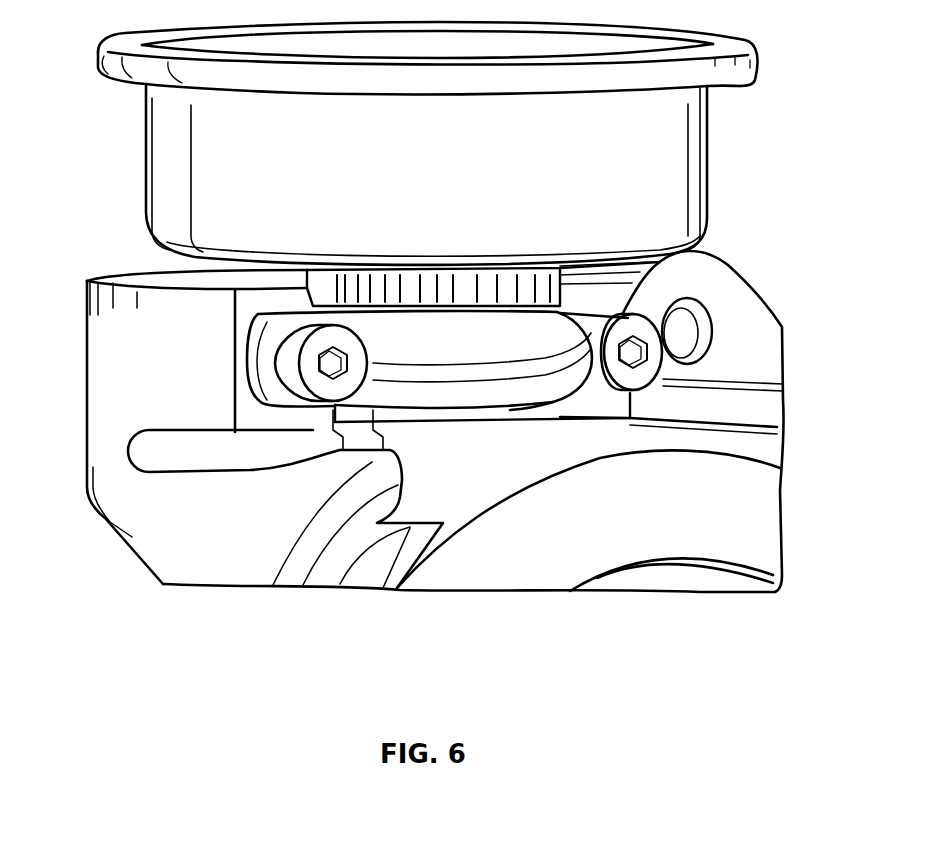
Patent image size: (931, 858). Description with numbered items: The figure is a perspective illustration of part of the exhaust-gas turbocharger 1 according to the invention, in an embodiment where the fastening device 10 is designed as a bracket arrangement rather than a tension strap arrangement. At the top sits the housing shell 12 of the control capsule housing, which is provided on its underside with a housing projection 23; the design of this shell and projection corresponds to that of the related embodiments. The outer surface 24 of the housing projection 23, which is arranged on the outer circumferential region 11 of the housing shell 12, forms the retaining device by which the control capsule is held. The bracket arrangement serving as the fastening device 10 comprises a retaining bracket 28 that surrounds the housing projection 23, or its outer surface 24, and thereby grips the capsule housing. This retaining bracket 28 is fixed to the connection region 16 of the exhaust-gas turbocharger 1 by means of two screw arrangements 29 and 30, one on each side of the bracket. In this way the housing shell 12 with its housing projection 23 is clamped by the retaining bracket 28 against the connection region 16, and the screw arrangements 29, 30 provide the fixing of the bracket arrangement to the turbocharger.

The exhaust-gas turbocharger 1 is at (88, 581).
The fastening device 10 is at (353, 410).
The outer circumferential region 11 is at (258, 312).
The housing shell 12 is at (713, 155).
The connection region 16 is at (160, 331).
The housing projection 23 is at (537, 285).
The outer surface 24 is at (537, 413).
The retaining bracket 28 is at (487, 393).
The screw arrangement 29 is at (293, 377).
The screw arrangement 30 is at (640, 367).